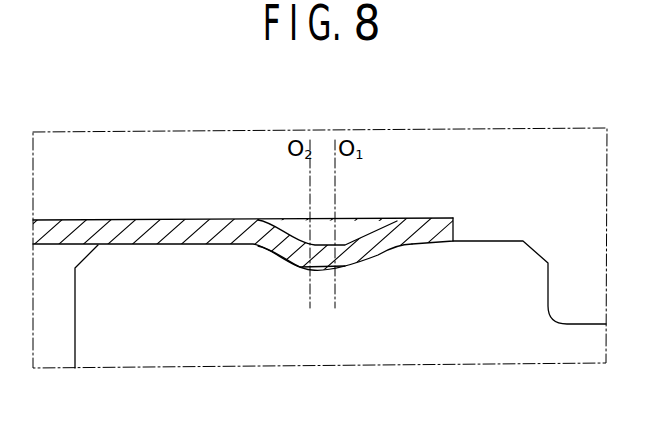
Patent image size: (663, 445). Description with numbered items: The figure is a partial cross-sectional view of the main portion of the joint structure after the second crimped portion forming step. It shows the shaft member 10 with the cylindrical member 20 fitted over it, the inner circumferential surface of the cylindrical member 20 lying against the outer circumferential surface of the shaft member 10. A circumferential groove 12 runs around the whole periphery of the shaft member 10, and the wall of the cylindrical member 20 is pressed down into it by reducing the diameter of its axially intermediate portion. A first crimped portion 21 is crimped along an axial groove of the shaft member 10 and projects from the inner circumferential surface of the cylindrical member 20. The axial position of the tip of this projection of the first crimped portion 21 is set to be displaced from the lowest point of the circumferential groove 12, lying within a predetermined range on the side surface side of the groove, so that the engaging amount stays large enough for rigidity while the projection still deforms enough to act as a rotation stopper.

The shaft member 10 is at (485, 252).
The circumferential groove 12 is at (397, 222).
The cylindrical member 20 is at (113, 222).
The first crimped portion 21 is at (290, 216).